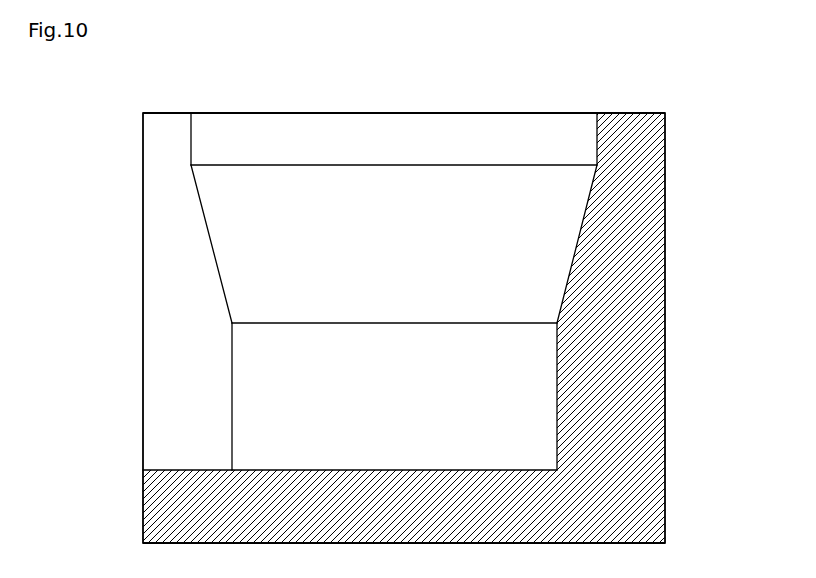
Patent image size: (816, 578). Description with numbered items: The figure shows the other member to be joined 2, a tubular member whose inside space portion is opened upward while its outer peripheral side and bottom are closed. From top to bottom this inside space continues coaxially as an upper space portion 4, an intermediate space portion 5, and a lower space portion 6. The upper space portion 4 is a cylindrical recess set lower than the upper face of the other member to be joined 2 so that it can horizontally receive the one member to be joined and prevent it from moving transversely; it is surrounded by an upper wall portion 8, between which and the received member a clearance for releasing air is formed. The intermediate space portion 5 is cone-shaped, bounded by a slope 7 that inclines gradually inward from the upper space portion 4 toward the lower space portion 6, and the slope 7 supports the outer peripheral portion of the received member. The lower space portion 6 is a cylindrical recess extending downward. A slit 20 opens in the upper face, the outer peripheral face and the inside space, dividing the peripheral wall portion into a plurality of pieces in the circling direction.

The other member to be joined 2 is at (141, 332).
The slit 20 is at (160, 393).
The upper space portion 4 is at (583, 148).
The intermediate space portion 5 is at (543, 282).
The lower space portion 6 is at (533, 425).
The slope 7 is at (575, 260).
The upper wall portion 8 is at (653, 140).